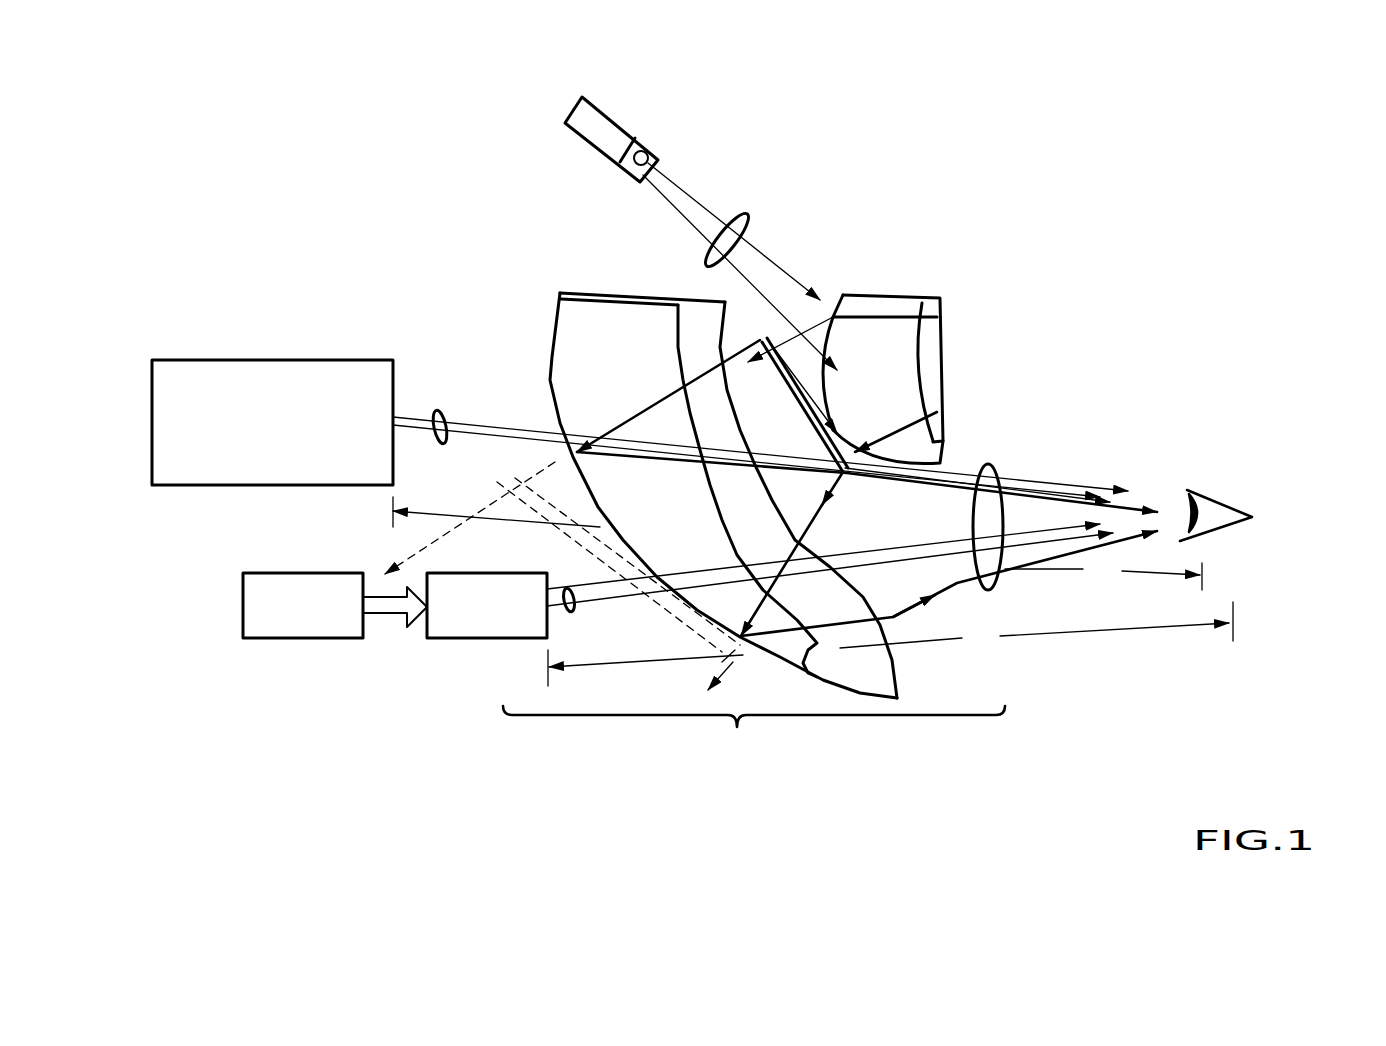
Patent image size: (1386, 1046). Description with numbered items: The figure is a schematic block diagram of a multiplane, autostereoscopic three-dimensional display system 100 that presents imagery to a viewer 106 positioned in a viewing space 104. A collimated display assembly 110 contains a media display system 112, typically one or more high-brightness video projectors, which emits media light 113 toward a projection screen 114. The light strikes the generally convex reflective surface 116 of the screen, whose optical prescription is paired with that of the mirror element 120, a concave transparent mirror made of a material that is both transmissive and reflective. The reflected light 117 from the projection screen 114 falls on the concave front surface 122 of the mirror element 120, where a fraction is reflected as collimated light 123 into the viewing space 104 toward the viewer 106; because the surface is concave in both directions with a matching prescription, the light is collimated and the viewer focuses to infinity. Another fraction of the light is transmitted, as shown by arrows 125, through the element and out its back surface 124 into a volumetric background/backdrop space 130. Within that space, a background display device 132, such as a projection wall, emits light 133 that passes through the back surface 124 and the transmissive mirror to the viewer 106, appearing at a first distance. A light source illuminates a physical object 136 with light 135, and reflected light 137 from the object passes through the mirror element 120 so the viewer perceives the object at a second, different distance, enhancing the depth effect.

The 3D display system 100 is at (1140, 126).
The viewing space 104 is at (1213, 705).
The viewer 106 is at (1266, 526).
The collimated display assembly 110 is at (754, 750).
The media display system 112 is at (577, 110).
The media light 113 is at (735, 218).
The projection screen 114 is at (865, 307).
The reflective surface 116 is at (915, 302).
The reflected light 117 is at (766, 350).
The mirror element 120 is at (663, 274).
The front surface 122 is at (703, 313).
The collimated light 123 is at (1040, 437).
The back surface 124 is at (593, 330).
The transmitted light 125 is at (723, 668).
The volumetric background/backdrop space 130 is at (377, 746).
The background display device 132 is at (243, 362).
The background light 133 is at (443, 412).
The illumination light 135 is at (382, 613).
The physical object 136 is at (447, 573).
The reflected object light 137 is at (571, 600).